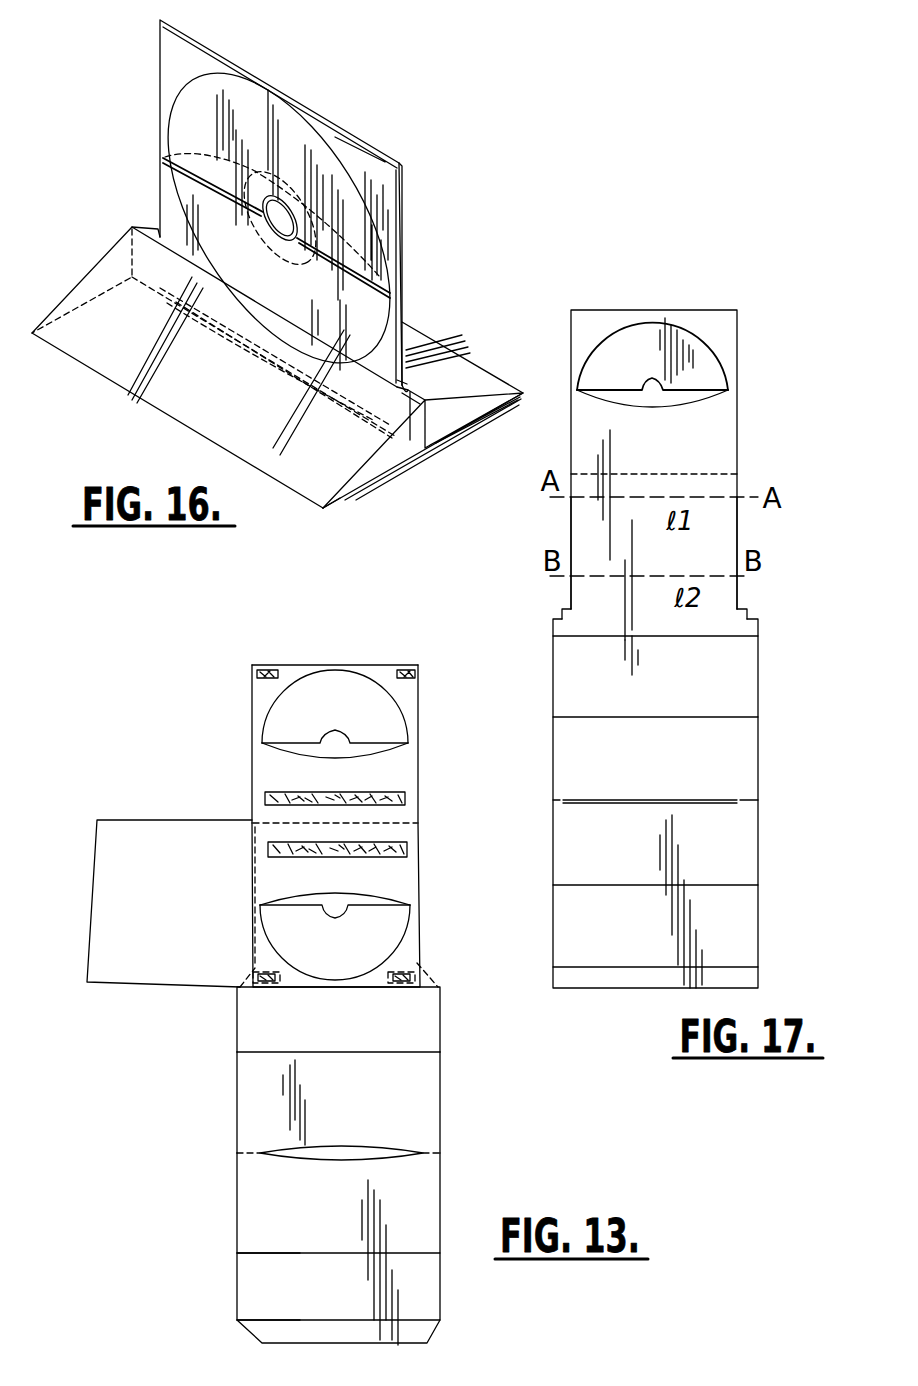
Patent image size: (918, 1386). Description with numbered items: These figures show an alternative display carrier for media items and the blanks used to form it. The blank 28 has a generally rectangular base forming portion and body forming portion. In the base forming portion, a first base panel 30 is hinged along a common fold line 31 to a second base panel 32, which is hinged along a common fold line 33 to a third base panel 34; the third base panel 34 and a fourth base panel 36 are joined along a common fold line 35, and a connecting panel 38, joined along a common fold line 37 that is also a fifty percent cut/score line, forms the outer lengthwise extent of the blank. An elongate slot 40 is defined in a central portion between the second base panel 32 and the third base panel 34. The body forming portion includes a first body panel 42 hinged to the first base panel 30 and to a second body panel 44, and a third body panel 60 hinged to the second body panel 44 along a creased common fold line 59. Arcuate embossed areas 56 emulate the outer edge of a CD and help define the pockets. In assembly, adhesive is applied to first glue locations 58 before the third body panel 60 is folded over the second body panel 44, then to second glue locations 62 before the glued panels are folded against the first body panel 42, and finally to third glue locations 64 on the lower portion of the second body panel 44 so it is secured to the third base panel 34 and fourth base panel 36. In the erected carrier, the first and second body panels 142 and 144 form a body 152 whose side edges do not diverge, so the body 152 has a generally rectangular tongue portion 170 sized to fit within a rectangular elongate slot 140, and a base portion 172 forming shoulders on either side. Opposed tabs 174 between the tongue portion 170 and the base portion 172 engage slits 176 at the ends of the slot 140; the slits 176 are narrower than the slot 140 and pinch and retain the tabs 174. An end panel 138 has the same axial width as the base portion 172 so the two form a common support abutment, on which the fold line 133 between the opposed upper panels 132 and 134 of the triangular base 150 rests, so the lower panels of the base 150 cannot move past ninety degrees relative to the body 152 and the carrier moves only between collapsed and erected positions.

In FIG. 13, the blank 28 is at (200, 670).
In FIG. 13, the first base panel 30 is at (423, 1025).
In FIG. 13, the common fold line 31 is at (275, 1050).
In FIG. 13, the second base panel 32 is at (428, 1083).
In FIG. 13, the common fold line 33 is at (248, 1152).
In FIG. 13, the third base panel 34 is at (423, 1207).
In FIG. 13, the common fold line 35 is at (270, 1253).
In FIG. 13, the fourth base panel 36 is at (430, 1288).
In FIG. 13, the common fold line 37 is at (260, 1320).
In FIG. 13, the connecting panel 38 is at (423, 1332).
In FIG. 13, the elongate slot 40 is at (343, 1153).
In FIG. 13, the first body panel 42 is at (408, 883).
In FIG. 13, the second body panel 44 is at (408, 697).
In FIG. 13, the embossed area 56 is at (330, 690).
In FIG. 13, the first glue locations 58 is at (272, 667).
In FIG. 13, the common fold line 59 is at (255, 883).
In FIG. 13, the third body panel 60 is at (177, 833).
In FIG. 13, the second glue locations 62 is at (400, 840).
In FIG. 13, the third glue locations 64 is at (240, 990).
In FIG. 16, the upper panel 132 is at (170, 393).
In FIG. 17, the upper panel 132 is at (737, 692).
In FIG. 16, the fold line 133 is at (157, 225).
In FIG. 16, the upper panel 134 is at (460, 362).
In FIG. 17, the upper panel 134 is at (732, 848).
In FIG. 16, the end panel 138 is at (433, 427).
In FIG. 17, the end panel 138 is at (657, 980).
In FIG. 17, the elongate slot 140 is at (648, 798).
In FIG. 16, the first body panel 142 is at (402, 240).
In FIG. 17, the first body panel 142 is at (720, 538).
In FIG. 16, the second body panel 144 is at (168, 42).
In FIG. 17, the second body panel 144 is at (723, 445).
In FIG. 16, the base 150 is at (373, 494).
In FIG. 16, the body 152 is at (405, 195).
In FIG. 17, the tongue portion 170 is at (725, 473).
In FIG. 16, the base portion 172 is at (412, 440).
In FIG. 17, the base portion 172 is at (553, 622).
In FIG. 16, the tabs 174 is at (408, 377).
In FIG. 17, the tabs 174 is at (568, 607).
In FIG. 16, the slits 176 is at (396, 405).
In FIG. 17, the slits 176 is at (733, 800).